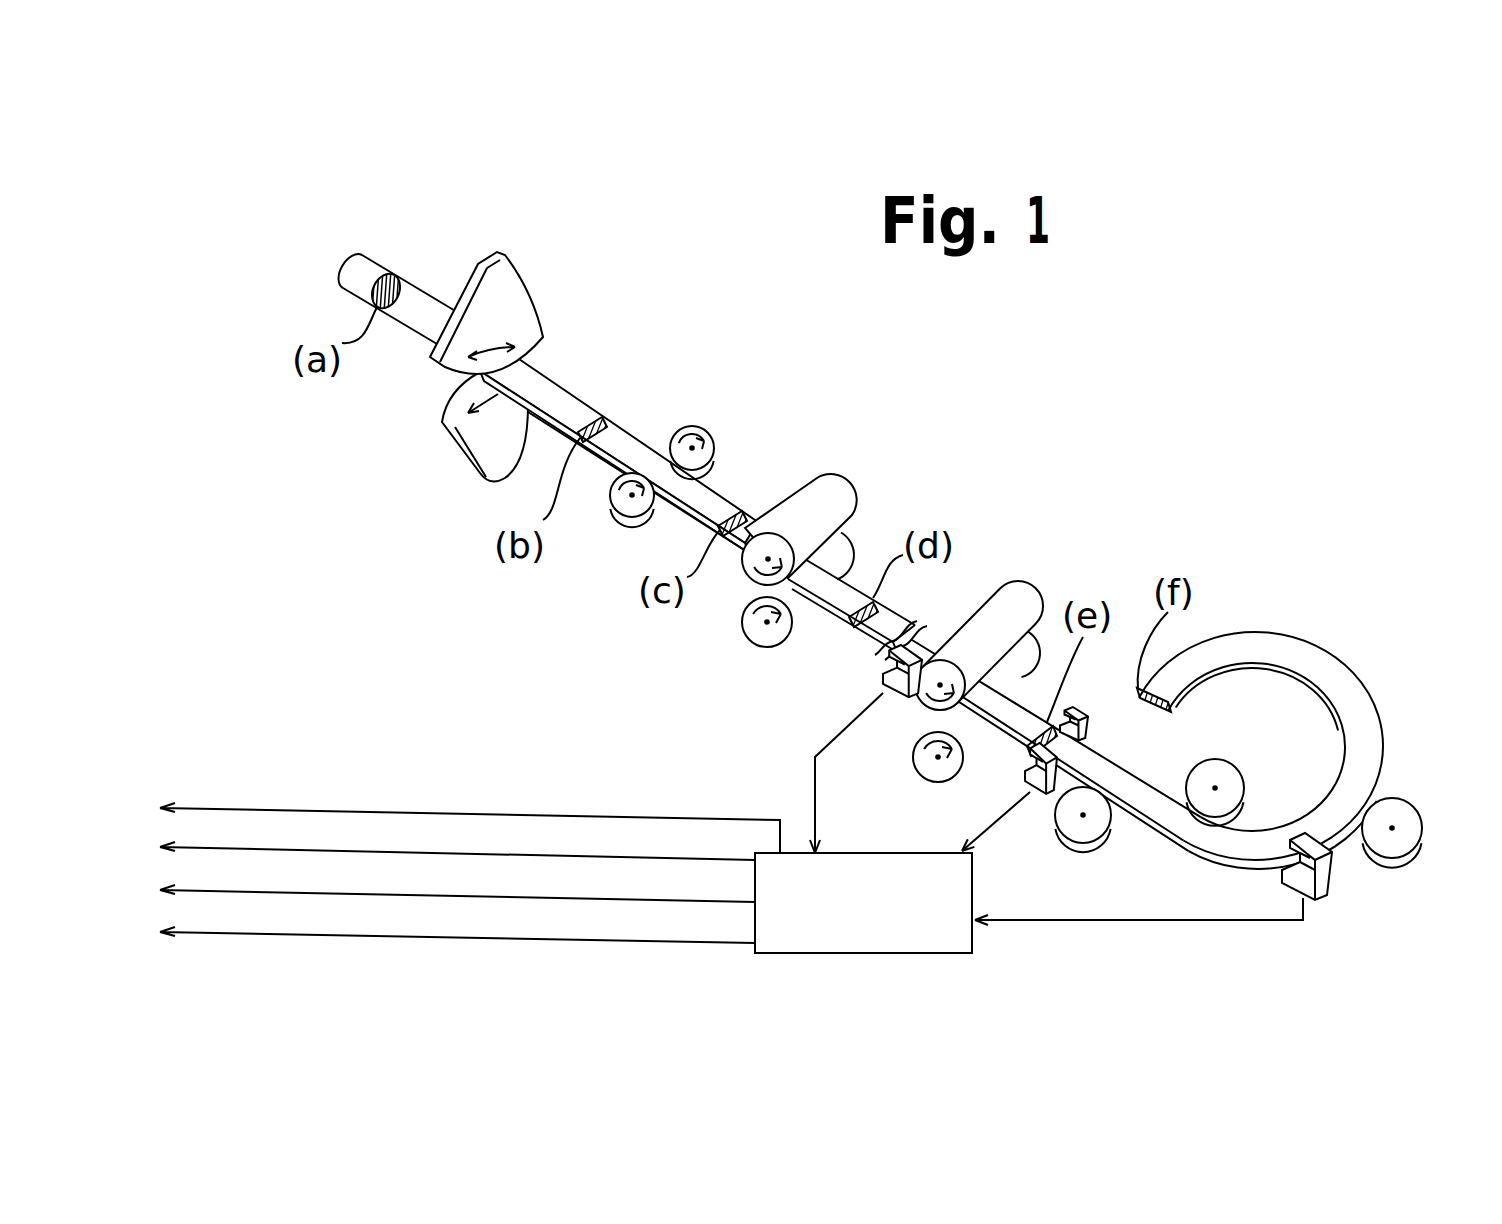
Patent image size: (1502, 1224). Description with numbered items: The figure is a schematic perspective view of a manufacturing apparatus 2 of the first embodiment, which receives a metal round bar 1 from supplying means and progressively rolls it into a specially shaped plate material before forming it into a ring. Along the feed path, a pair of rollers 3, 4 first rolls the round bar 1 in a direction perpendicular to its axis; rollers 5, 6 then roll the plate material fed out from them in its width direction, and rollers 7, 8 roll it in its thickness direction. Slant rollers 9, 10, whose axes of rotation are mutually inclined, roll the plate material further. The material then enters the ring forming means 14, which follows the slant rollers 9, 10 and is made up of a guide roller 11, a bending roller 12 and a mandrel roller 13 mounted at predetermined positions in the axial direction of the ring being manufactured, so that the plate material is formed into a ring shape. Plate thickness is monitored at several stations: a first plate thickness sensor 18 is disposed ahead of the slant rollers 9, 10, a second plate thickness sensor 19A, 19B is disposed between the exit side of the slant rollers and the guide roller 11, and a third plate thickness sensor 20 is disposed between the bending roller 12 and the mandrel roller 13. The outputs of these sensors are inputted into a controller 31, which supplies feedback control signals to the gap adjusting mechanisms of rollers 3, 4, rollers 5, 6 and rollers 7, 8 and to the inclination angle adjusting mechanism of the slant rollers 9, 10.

The metal round bar 1 is at (352, 282).
The manufacturing apparatus 2 is at (727, 325).
The roller 3 is at (520, 298).
The roller 4 is at (480, 453).
The roller 5 is at (713, 440).
The roller 6 is at (623, 517).
The roller 7 is at (846, 489).
The roller 8 is at (760, 645).
The slant roller 9 is at (1030, 585).
The slant roller 10 is at (930, 783).
The guide roller 11 is at (1067, 843).
The bending roller 12 is at (1407, 815).
The mandrel roller 13 is at (1225, 767).
The ring forming means 14 is at (1279, 615).
The first plate thickness sensor 18 is at (882, 676).
The second plate thickness sensor 19A is at (1025, 780).
The second plate thickness sensor 19B is at (1085, 712).
The third plate thickness sensor 20 is at (1327, 898).
The controller 31 is at (863, 953).